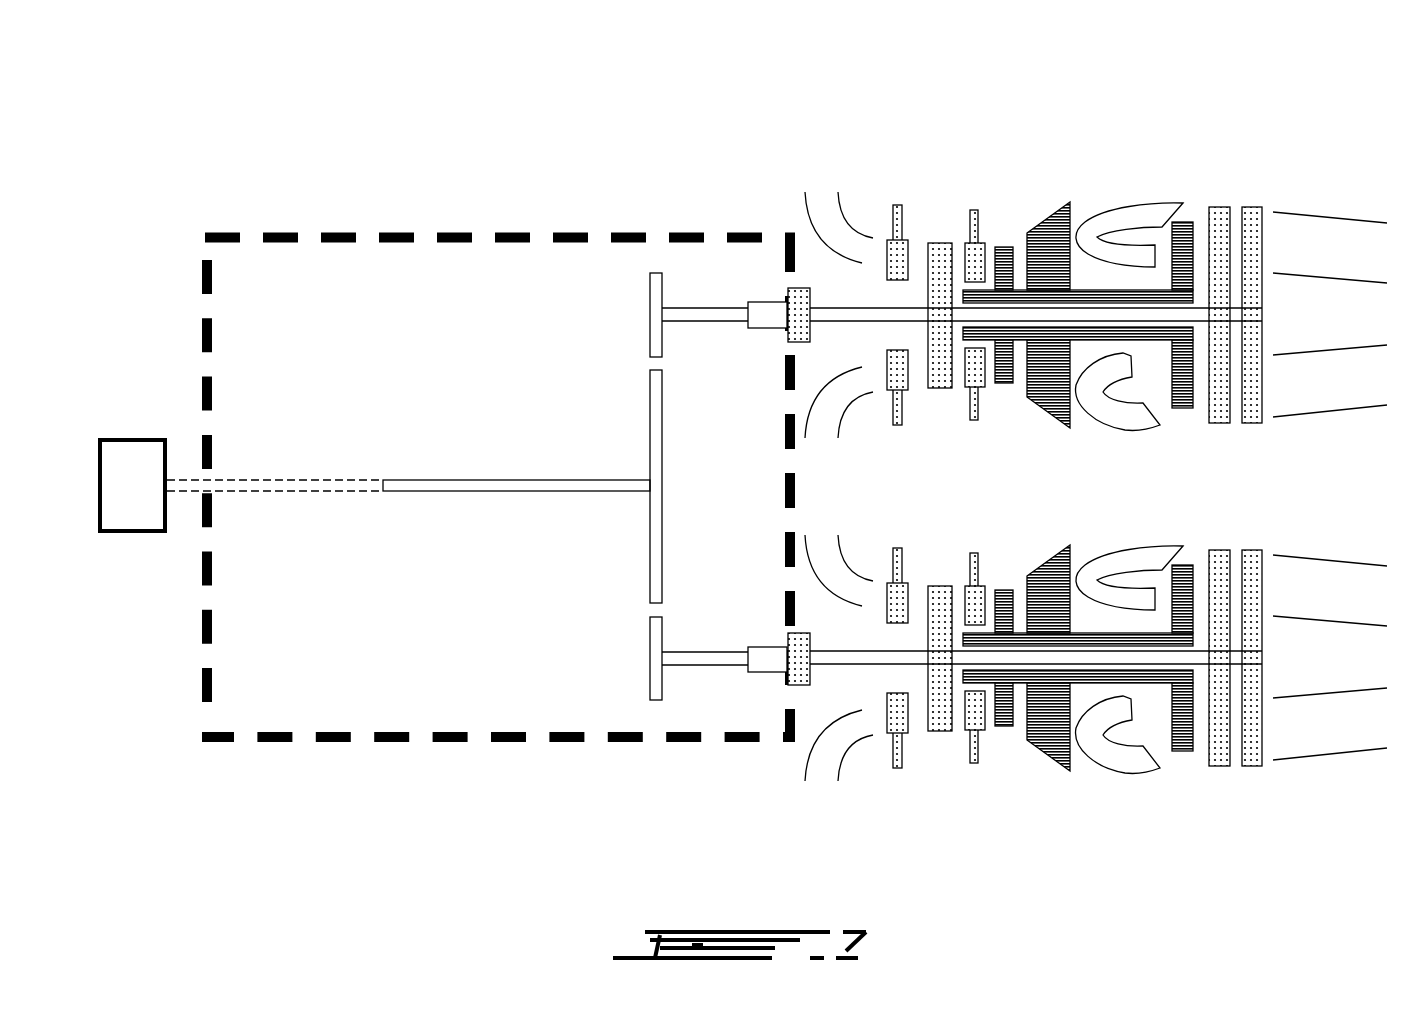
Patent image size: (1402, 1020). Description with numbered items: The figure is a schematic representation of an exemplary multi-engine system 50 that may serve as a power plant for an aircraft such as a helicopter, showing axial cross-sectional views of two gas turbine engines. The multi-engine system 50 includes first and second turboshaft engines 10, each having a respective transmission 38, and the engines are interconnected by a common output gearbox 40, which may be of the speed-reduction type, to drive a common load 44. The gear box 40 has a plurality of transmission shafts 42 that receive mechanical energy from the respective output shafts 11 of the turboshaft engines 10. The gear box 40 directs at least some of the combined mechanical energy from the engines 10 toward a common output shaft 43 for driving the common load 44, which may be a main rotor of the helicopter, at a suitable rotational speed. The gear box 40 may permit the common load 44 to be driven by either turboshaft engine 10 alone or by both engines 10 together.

The turboshaft engine 10 is at (1117, 168).
The output shaft 11 is at (841, 308).
The transmission 38 is at (852, 790).
The output gearbox 40 is at (390, 742).
The transmission shaft 42 is at (707, 308).
The common output shaft 43 is at (187, 493).
The common load 44 is at (135, 438).
The multi-engine system 50 is at (283, 153).